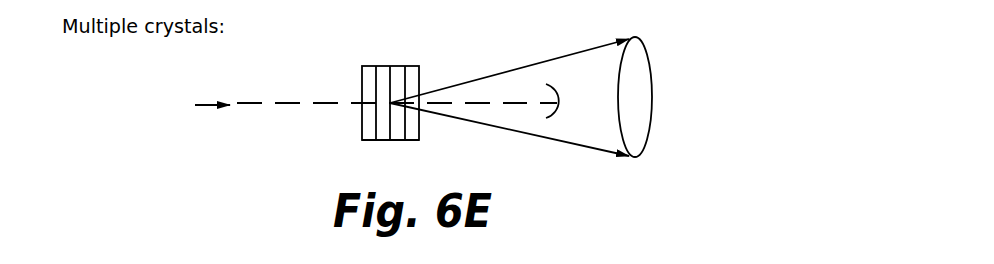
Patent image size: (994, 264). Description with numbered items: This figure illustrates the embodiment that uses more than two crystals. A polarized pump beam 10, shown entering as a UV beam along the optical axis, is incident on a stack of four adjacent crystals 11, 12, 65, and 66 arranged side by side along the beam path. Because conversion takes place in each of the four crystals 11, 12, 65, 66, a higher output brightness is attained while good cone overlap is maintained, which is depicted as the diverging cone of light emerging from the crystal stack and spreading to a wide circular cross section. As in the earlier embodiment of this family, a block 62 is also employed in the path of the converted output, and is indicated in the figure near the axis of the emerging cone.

The polarized pump beam 10 is at (243, 98).
The crystal 11 is at (362, 67).
The crystal 12 is at (382, 141).
The crystal 65 is at (392, 66).
The crystal 66 is at (417, 141).
The block 62 is at (561, 84).